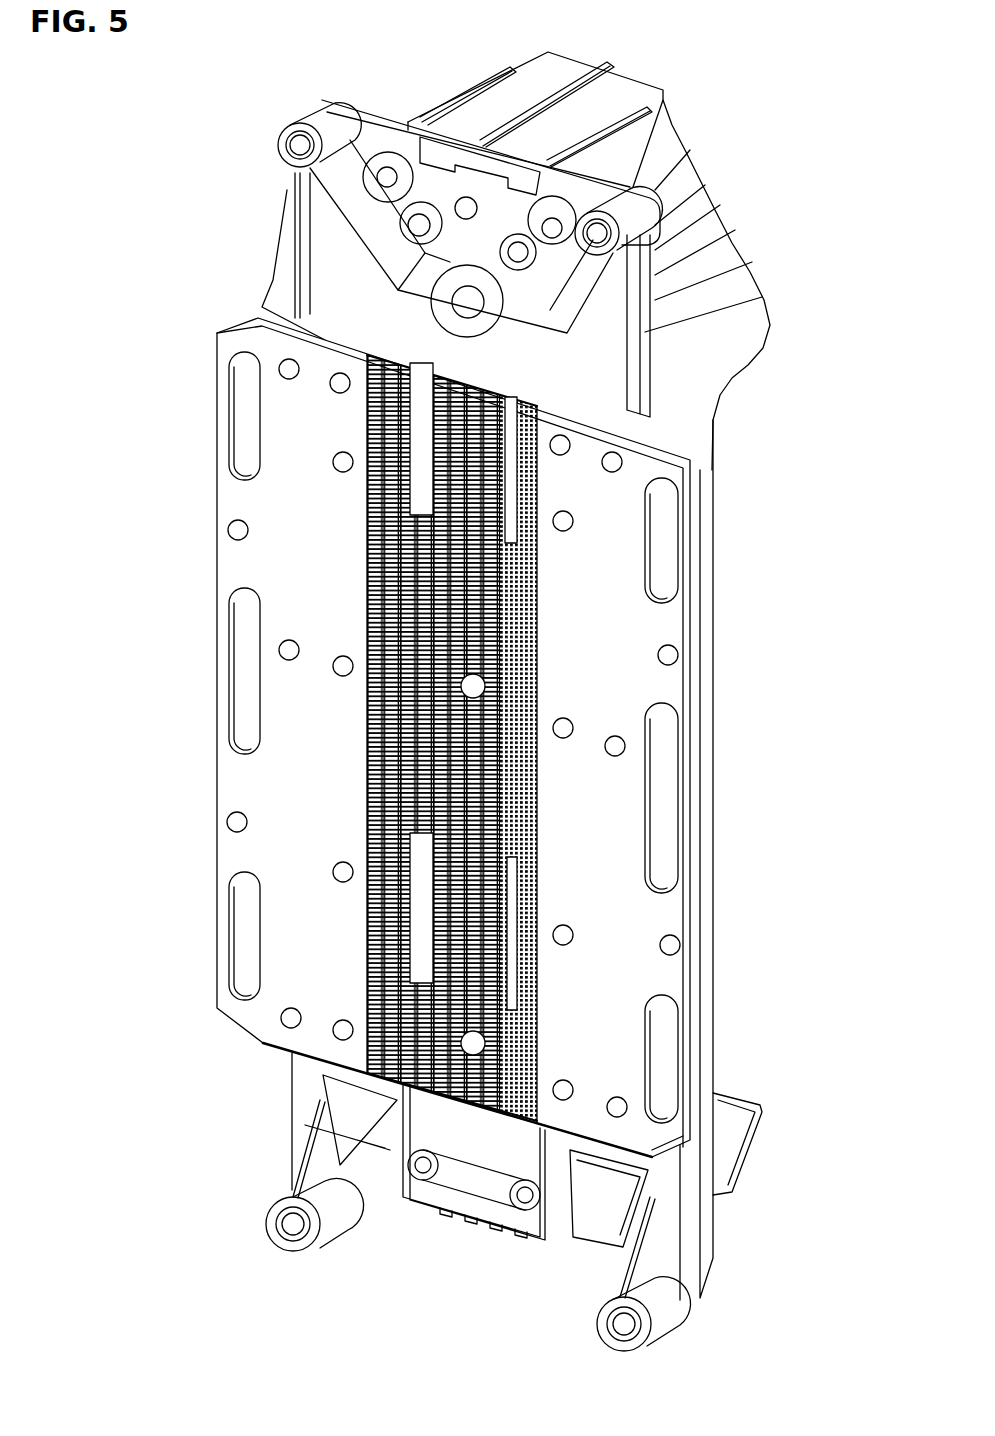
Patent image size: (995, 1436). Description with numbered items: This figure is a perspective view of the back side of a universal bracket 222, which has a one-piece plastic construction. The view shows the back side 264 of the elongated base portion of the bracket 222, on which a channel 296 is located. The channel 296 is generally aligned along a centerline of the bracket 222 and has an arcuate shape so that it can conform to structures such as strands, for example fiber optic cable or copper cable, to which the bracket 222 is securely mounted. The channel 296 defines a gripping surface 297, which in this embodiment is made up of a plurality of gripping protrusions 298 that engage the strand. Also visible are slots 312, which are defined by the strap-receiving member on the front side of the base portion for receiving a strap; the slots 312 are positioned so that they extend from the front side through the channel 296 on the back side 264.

The universal bracket 222 is at (797, 291).
The back side 264 is at (616, 634).
The channel 296 is at (512, 377).
The gripping surface 297 is at (408, 752).
The gripping protrusions 298 is at (452, 1087).
The slots 312 is at (515, 892).